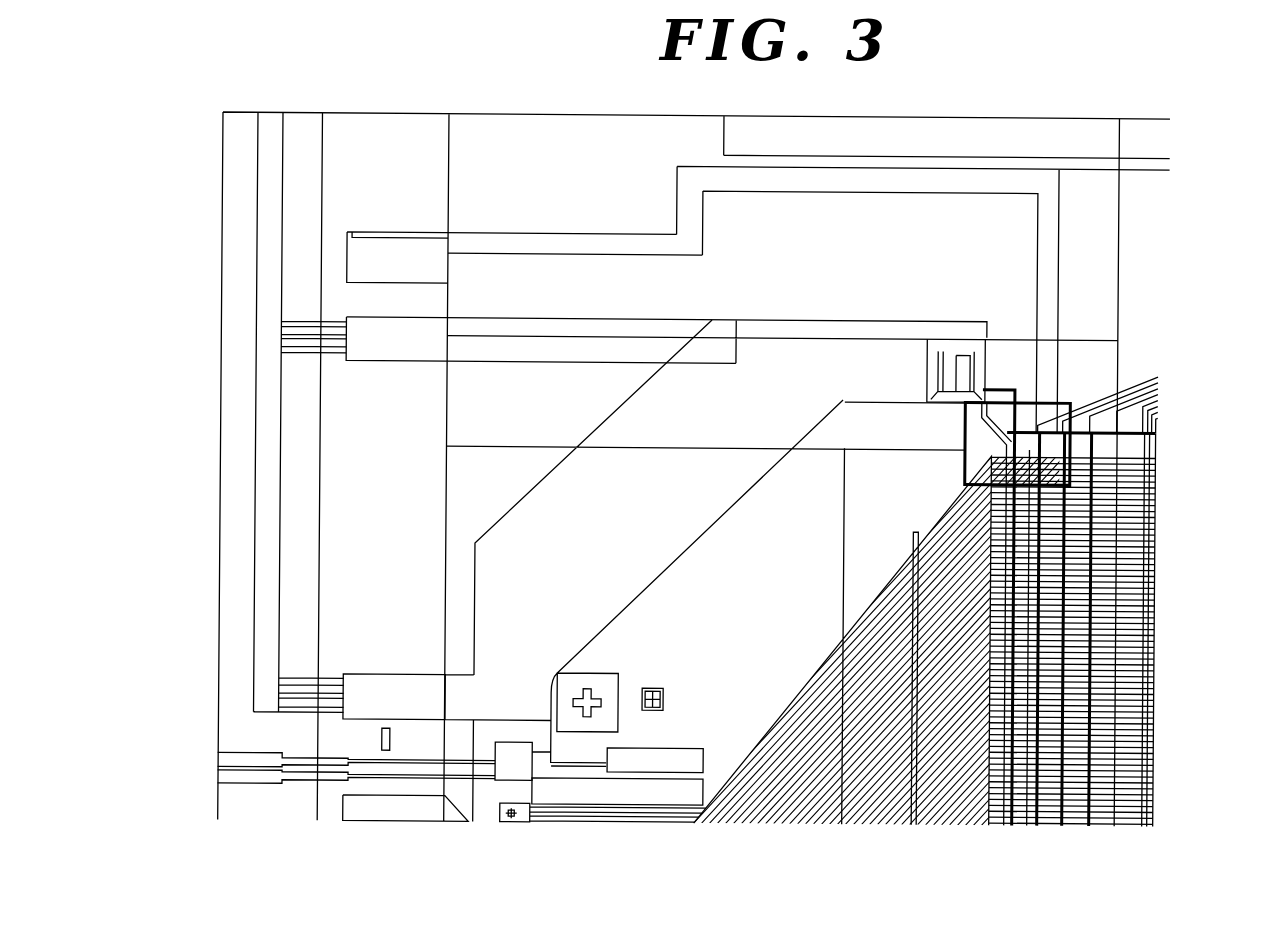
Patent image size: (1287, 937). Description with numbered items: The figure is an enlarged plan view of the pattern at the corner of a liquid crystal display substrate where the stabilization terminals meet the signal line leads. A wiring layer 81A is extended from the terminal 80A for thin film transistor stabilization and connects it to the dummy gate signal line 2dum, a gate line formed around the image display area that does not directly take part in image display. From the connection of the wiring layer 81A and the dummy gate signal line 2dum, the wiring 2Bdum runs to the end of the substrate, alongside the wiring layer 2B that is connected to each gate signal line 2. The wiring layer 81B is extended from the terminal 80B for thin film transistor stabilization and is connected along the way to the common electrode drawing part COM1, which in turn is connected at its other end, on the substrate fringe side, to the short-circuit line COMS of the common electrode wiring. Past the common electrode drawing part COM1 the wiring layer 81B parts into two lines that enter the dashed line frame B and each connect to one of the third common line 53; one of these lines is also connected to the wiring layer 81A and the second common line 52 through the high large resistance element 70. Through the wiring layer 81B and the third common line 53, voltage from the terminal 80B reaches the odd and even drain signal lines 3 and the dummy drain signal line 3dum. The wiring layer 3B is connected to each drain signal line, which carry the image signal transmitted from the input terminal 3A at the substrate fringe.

The terminal for thin film transistor stabilization 80A is at (348, 256).
The terminal for thin film transistor stabilization 80B is at (360, 358).
The wiring layer 81A is at (1060, 247).
The wiring layer 81B is at (593, 326).
The high large resistance element 70 is at (986, 353).
The dashed line frame B is at (1004, 443).
The second common line 52 is at (1162, 430).
The third common line 53 is at (1032, 818).
The gate signal line 2 is at (1122, 818).
The dummy gate signal line 2dum is at (1039, 819).
The wiring layer 2B is at (1162, 370).
The wiring 2Bdum is at (1162, 370).
The drain signal line 3 is at (1164, 463).
The dummy drain signal line 3dum is at (1162, 460).
The input terminal 3A is at (612, 792).
The wiring layer 3B is at (807, 686).
The common electrode drawing part COM1 is at (663, 549).
The short-circuit line of common electrode wiring COMS is at (258, 527).